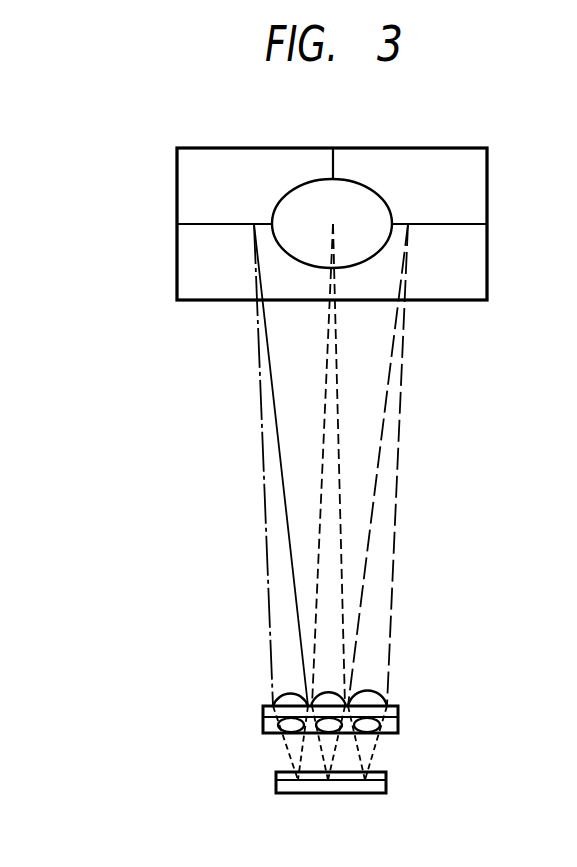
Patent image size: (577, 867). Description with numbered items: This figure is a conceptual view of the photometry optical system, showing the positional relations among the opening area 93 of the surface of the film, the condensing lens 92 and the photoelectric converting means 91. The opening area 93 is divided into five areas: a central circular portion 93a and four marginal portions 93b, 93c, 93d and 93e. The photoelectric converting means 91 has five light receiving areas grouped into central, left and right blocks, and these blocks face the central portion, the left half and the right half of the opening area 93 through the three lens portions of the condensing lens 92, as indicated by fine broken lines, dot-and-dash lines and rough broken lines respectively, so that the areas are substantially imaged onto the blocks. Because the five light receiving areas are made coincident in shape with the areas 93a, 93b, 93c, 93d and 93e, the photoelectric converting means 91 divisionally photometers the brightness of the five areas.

The opening area of the surface of the film 93 is at (273, 146).
The central circular portion 93a is at (348, 198).
The marginal portion 93b is at (193, 271).
The marginal portion 93c is at (193, 182).
The marginal portion 93d is at (475, 274).
The marginal portion 93e is at (477, 185).
The condensing lens 92 is at (398, 717).
The photoelectric converting means 91 is at (386, 783).